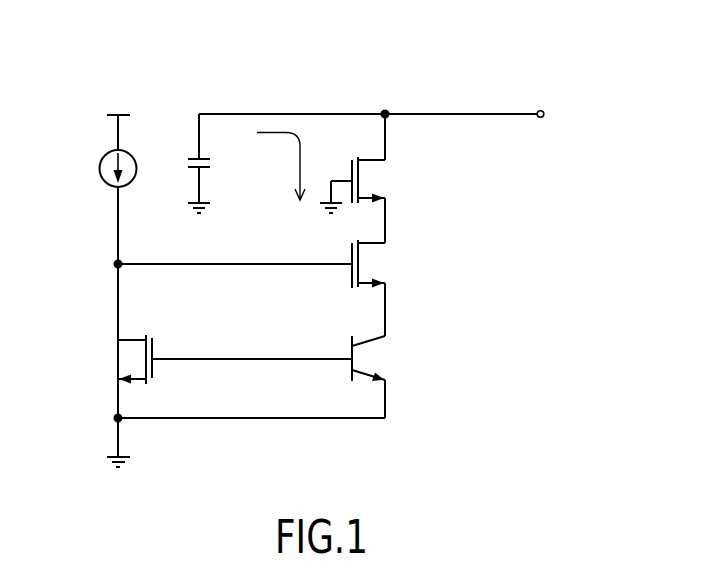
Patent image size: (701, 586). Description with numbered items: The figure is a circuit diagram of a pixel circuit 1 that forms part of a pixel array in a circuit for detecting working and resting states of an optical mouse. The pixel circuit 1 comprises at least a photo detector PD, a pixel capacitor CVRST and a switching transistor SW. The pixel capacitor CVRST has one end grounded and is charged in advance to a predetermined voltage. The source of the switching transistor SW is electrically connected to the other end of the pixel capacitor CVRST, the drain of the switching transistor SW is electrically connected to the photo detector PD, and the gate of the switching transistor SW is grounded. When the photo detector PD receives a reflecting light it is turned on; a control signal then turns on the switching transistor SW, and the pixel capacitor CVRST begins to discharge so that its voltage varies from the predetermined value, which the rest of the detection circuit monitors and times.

The pixel circuit 1 is at (66, 44).
The switching transistor SW is at (375, 178).
The photo detector PD is at (273, 288).
The pixel capacitor CVRST is at (238, 163).